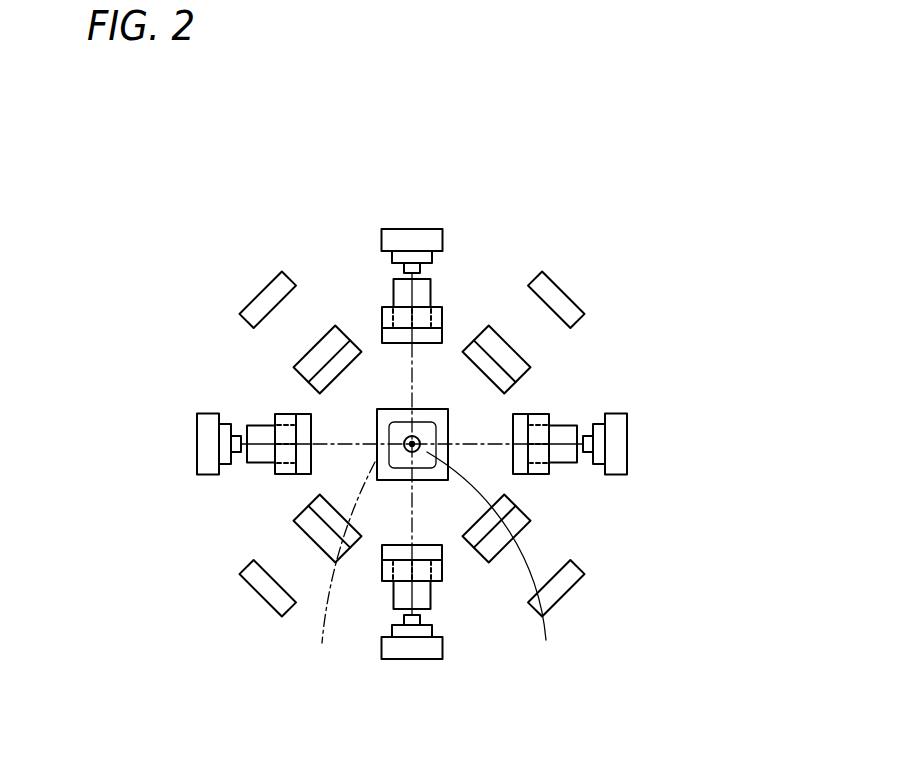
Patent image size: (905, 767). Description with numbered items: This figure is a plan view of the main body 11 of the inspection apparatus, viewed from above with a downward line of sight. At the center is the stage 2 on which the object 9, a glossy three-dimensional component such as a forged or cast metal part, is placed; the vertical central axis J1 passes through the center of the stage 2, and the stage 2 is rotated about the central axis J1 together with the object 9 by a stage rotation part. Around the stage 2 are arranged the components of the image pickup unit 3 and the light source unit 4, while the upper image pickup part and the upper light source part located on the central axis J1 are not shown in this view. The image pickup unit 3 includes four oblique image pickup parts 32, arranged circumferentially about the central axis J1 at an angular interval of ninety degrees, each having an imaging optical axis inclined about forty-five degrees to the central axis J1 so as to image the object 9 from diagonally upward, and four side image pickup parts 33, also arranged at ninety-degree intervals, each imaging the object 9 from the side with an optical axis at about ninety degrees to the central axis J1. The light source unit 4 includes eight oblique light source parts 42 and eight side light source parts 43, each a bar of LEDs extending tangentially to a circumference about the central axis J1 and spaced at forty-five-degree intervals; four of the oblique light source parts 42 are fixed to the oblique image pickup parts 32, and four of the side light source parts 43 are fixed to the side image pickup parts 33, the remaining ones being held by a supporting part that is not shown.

The stage 2 is at (399, 451).
The image pickup unit 3 is at (146, 226).
The light source unit 4 is at (715, 257).
The object 9 is at (490, 561).
The main body 11 is at (340, 146).
The oblique image pickup part 32 is at (402, 292).
The side image pickup part 33 is at (402, 257).
The oblique light source part 42 is at (437, 317).
The side light source part 43 is at (427, 240).
The central axis J1 is at (341, 568).